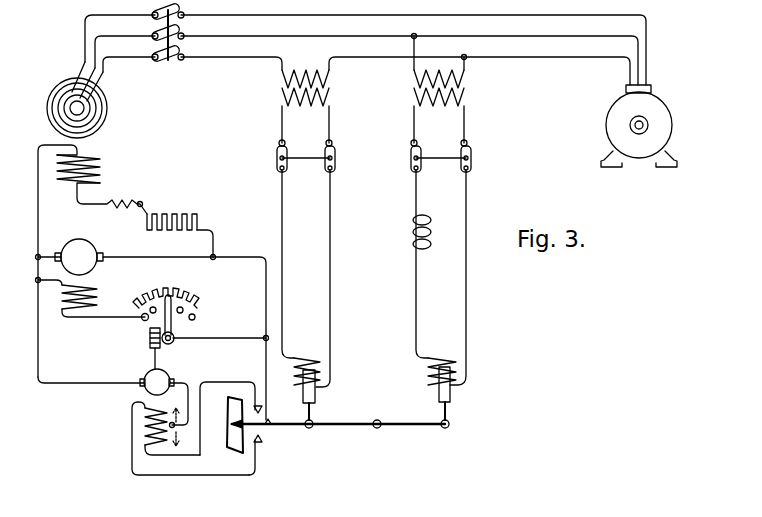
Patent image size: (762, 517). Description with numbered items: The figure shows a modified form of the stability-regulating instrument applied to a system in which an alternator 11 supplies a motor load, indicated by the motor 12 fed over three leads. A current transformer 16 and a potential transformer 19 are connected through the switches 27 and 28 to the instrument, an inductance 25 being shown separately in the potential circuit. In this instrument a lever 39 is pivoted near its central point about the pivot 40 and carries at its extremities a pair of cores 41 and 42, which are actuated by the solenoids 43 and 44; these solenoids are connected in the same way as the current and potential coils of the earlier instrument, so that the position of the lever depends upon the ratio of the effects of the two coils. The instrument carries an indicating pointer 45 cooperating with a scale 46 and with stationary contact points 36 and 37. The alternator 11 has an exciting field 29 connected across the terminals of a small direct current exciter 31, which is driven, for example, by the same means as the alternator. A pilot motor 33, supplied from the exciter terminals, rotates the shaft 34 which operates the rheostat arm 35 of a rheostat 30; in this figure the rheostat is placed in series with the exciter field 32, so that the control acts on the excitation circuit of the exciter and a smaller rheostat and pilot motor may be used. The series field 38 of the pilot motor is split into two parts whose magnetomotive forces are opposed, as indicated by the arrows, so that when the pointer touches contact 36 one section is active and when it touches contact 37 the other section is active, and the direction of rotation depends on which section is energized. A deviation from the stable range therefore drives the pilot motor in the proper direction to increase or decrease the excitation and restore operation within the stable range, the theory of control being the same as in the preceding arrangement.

The alternator 11 is at (66, 84).
The electric motor 12 is at (668, 108).
The current transformer 16 is at (332, 90).
The potential transformer 19 is at (466, 90).
The inductance 25 is at (407, 237).
The switch 27 is at (338, 157).
The switch 28 is at (476, 157).
The exciting field 29 is at (103, 162).
The rheostat 30 is at (186, 292).
The direct current exciter 31 is at (80, 240).
The exciter field 32 is at (95, 291).
The pilot motor 33 is at (144, 388).
The shaft 34 is at (154, 360).
The rheostat arm 35 is at (196, 320).
The stationary contact point 36 is at (260, 408).
The stationary contact point 37 is at (259, 442).
The series field 38 is at (145, 432).
The lever 39 is at (438, 432).
The pivot 40 is at (376, 430).
The core 41 is at (316, 396).
The core 42 is at (450, 403).
The solenoid 43 is at (302, 360).
The solenoid 44 is at (437, 360).
The indicating pointer 45 is at (290, 428).
The scale 46 is at (227, 445).